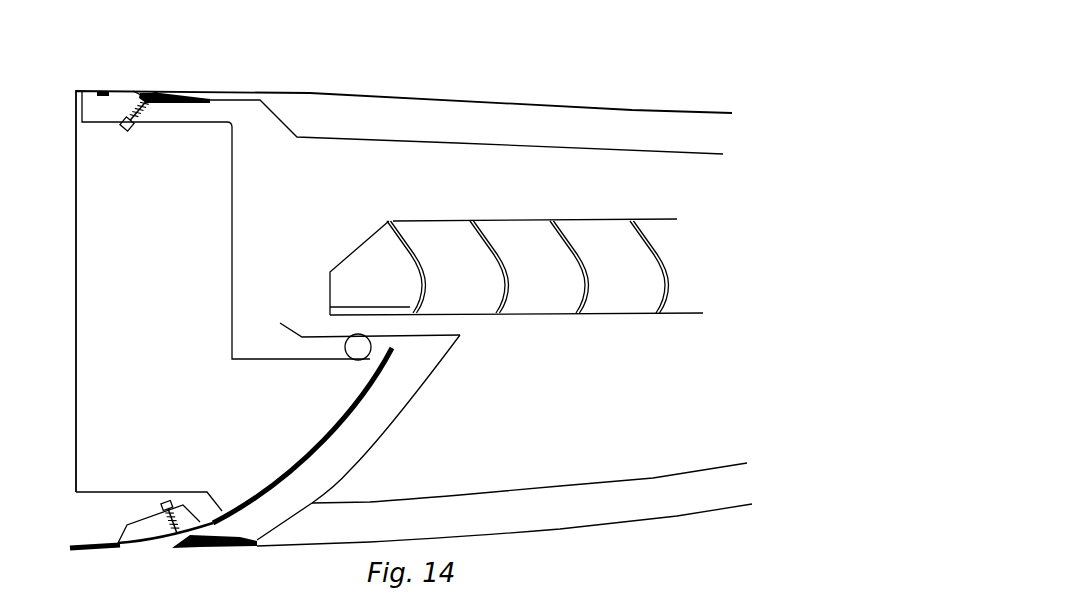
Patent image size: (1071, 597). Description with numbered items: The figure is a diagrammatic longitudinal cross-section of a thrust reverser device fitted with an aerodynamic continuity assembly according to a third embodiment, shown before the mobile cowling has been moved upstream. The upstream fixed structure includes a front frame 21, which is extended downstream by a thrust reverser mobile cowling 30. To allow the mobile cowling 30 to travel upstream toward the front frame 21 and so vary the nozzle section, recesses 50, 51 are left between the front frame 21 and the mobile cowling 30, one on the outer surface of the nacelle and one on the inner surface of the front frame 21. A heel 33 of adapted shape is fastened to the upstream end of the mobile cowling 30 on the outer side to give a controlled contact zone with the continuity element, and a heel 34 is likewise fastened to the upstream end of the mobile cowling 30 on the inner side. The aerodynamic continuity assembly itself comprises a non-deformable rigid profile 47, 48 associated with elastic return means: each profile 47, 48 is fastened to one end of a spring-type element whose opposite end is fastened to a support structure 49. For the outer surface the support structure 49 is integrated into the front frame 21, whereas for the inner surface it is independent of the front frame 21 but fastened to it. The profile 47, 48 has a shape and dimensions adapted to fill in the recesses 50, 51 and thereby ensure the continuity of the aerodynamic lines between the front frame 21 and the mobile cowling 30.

The front frame 21 is at (100, 245).
The thrust reverser mobile cowling 30 is at (520, 123).
The heel 33 is at (157, 90).
The heel 34 is at (197, 546).
The profile 47 is at (125, 88).
The profile 48 is at (147, 547).
The support structure 49 is at (120, 523).
The recess 50 is at (109, 88).
The recess 51 is at (118, 552).